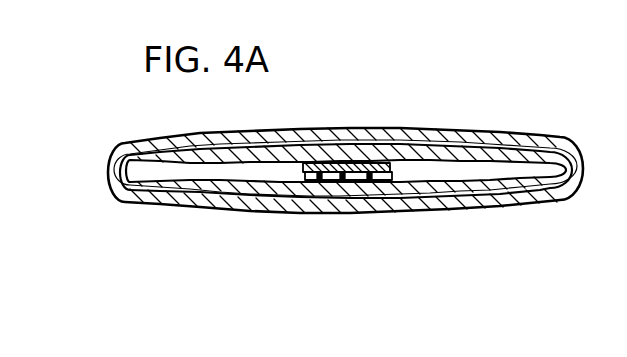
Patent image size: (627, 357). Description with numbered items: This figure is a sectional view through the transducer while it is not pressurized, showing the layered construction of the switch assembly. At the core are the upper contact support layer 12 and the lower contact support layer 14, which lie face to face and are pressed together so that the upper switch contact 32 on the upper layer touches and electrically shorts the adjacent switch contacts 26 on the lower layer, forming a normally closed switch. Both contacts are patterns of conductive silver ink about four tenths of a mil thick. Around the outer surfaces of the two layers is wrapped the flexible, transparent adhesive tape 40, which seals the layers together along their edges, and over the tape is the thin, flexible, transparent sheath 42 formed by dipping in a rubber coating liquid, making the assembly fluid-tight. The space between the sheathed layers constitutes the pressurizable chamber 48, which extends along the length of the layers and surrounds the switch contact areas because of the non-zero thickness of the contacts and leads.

The sheath 42 is at (165, 136).
The adhesive tape 40 is at (162, 195).
The upper contact support layer 12 is at (257, 152).
The lower contact support layer 14 is at (254, 186).
The pressurizable chamber 48 is at (434, 160).
The upper switch contact 32 is at (352, 162).
The switch contacts 26 is at (369, 181).